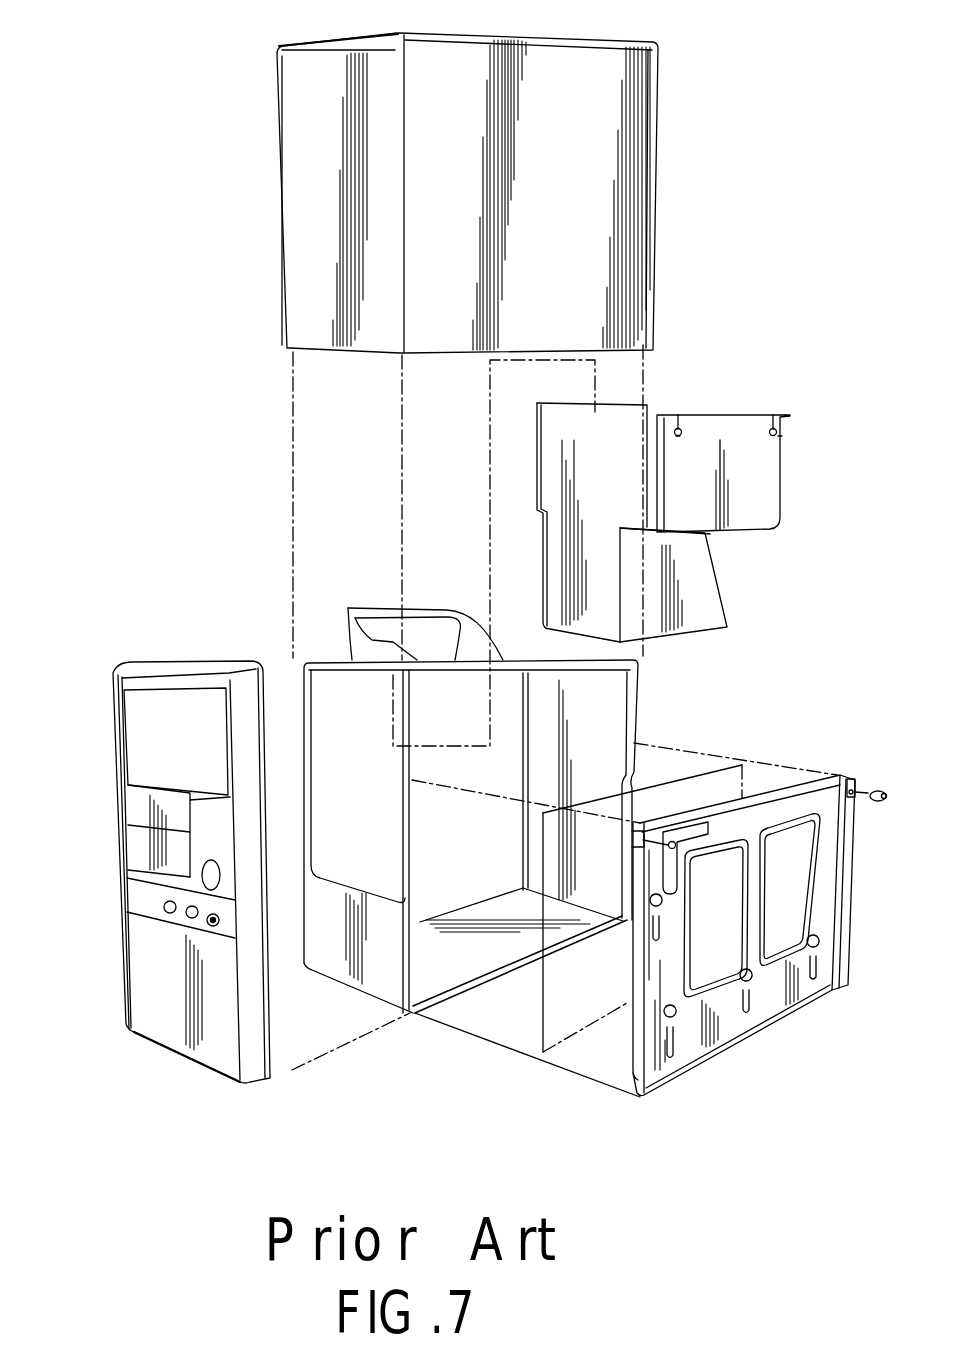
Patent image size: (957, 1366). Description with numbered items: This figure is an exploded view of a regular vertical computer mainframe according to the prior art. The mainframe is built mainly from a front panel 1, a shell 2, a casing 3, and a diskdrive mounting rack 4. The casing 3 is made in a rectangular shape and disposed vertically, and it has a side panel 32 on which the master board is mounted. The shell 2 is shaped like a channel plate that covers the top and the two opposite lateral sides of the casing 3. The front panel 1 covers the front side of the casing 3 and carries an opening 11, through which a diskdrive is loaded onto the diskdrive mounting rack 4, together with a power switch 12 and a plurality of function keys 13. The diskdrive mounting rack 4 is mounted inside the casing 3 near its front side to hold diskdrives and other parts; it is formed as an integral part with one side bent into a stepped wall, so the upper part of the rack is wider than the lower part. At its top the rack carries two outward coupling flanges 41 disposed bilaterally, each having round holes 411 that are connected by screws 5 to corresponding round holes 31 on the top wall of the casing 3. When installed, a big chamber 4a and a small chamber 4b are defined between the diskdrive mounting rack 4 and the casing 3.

The front panel 1 is at (173, 927).
The opening 11 is at (127, 747).
The power switch 12 is at (213, 875).
The function keys 13 is at (192, 917).
The shell 2 is at (637, 192).
The casing 3 is at (482, 967).
The round holes 31 is at (420, 621).
The side panel 32 is at (695, 1062).
The diskdrive mounting rack 4 is at (674, 493).
The big chamber 4a is at (573, 458).
The small chamber 4b is at (567, 578).
The outward coupling flanges 41 is at (790, 418).
The round holes 411 is at (678, 428).
The screws 5 is at (678, 437).